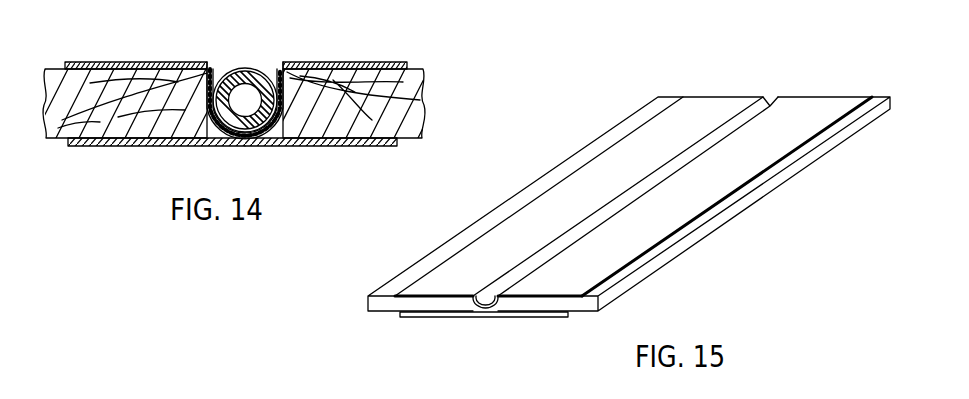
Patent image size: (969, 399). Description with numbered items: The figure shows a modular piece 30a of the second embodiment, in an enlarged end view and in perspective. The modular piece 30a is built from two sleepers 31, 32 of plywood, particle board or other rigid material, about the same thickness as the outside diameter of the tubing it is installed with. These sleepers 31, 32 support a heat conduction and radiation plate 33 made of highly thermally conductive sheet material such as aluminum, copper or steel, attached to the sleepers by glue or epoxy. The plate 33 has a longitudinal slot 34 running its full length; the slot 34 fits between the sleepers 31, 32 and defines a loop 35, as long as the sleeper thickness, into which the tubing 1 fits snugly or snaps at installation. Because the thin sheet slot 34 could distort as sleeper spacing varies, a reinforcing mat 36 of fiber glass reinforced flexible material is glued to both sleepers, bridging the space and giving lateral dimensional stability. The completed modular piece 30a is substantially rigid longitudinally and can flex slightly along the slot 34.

In FIG. 14, the tubing 1 is at (236, 66).
In FIG. 15, the modular piece 30a is at (601, 174).
In FIG. 14, the sleeper 31 is at (45, 78).
In FIG. 15, the sleeper 31 is at (367, 302).
In FIG. 14, the sleeper 32 is at (425, 98).
In FIG. 15, the sleeper 32 is at (599, 301).
In FIG. 14, the heat conduction and radiation plate 33 is at (337, 62).
In FIG. 15, the heat conduction and radiation plate 33 is at (812, 112).
In FIG. 14, the longitudinal slot 34 is at (272, 68).
In FIG. 15, the longitudinal slot 34 is at (707, 143).
In FIG. 14, the loop 35 is at (213, 146).
In FIG. 14, the reinforcing mat 36 is at (318, 146).